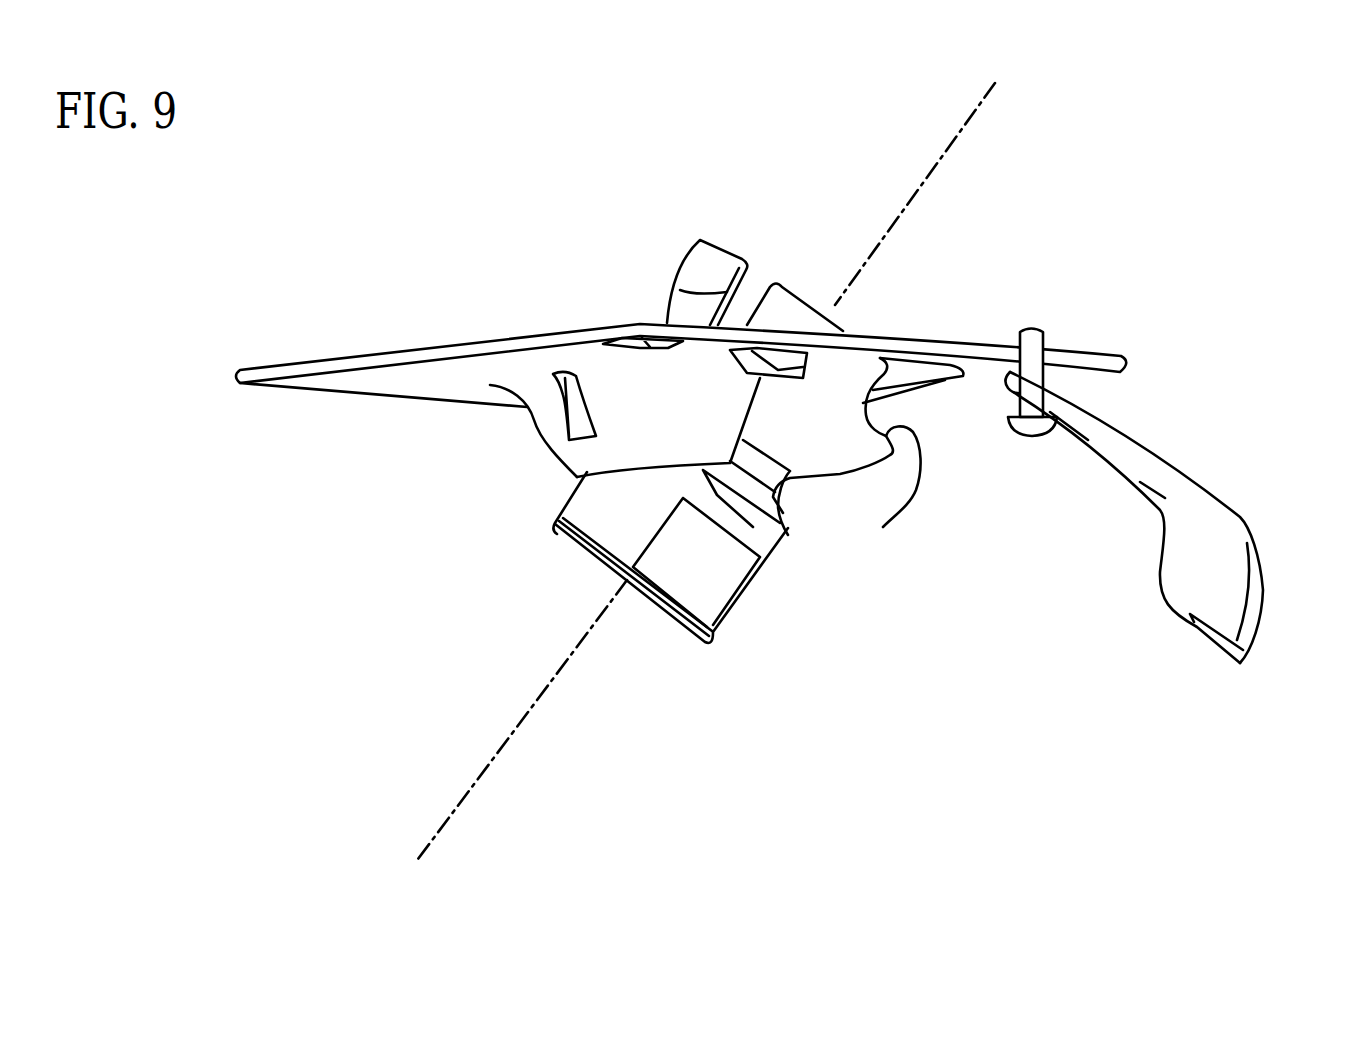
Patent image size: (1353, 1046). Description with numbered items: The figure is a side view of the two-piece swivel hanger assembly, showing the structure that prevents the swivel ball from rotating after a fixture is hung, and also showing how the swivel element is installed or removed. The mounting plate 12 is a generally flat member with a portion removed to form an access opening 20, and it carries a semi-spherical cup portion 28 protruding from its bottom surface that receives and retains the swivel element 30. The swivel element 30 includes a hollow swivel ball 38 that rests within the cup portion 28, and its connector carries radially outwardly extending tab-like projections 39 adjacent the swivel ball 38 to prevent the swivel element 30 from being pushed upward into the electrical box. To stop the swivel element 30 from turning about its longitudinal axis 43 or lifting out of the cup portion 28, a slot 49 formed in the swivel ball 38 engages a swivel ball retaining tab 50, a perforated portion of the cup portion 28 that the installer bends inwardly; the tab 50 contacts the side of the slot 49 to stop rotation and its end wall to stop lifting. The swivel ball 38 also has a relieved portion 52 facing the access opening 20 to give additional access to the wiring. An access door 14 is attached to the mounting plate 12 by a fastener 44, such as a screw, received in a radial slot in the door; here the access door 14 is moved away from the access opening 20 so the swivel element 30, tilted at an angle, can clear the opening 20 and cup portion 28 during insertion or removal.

The mounting plate 12 is at (292, 387).
The access door 14 is at (1205, 485).
The access opening 20 is at (938, 383).
The semi-spherical cup portion 28 is at (557, 448).
The swivel element 30 is at (750, 585).
The swivel ball 38 is at (703, 240).
The tab-like projections 39 is at (720, 528).
The longitudinal axis 43 is at (950, 143).
The fastener 44 is at (1030, 433).
The slot 49 is at (680, 290).
The swivel ball retaining tab 50 is at (566, 393).
The relieved portion 52 is at (883, 527).